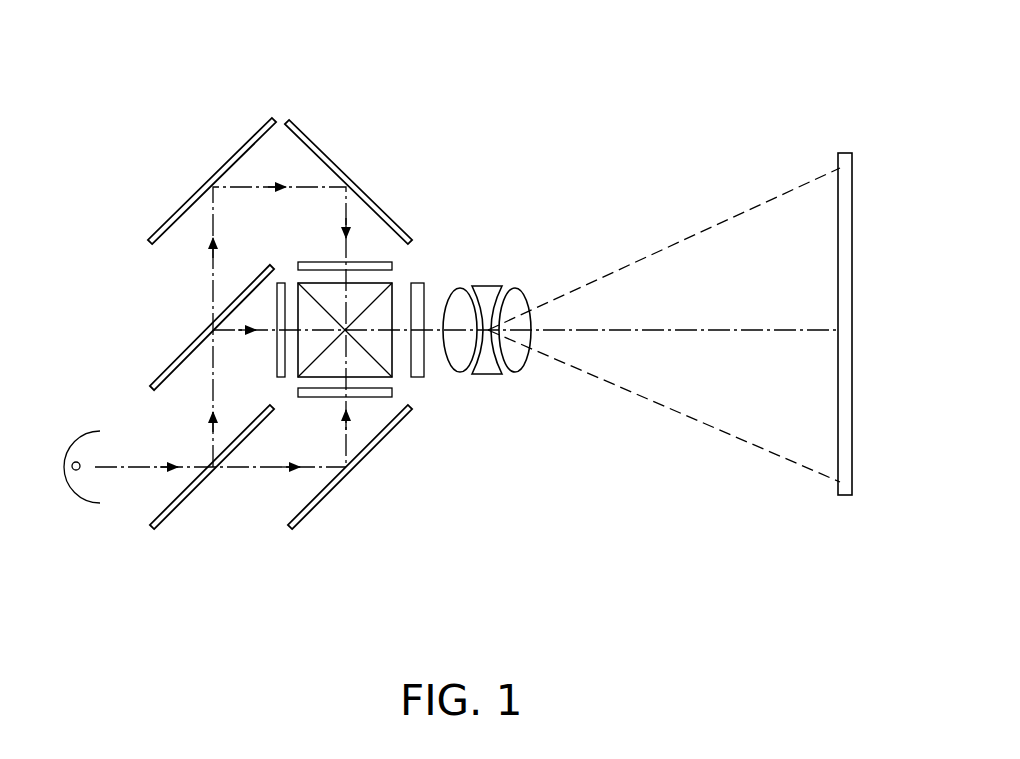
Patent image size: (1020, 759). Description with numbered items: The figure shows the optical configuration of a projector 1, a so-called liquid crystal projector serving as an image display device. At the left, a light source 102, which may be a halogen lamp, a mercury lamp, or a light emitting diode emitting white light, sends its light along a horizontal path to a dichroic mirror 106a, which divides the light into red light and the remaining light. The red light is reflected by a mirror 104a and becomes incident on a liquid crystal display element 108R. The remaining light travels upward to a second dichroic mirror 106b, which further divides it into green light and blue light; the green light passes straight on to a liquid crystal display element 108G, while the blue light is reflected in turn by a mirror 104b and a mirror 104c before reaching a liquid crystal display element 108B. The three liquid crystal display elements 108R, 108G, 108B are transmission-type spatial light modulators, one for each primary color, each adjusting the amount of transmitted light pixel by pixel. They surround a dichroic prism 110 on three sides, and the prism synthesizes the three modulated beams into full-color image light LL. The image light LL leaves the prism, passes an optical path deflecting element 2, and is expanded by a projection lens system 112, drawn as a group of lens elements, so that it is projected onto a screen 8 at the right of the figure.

The projector 1 is at (724, 88).
The light source 102 is at (82, 500).
The dichroic mirror 106a is at (187, 500).
The dichroic mirror 106b is at (170, 366).
The mirror 104a is at (322, 500).
The mirror 104b is at (233, 158).
The mirror 104c is at (326, 158).
The liquid crystal display element 108R is at (323, 400).
The liquid crystal display element 108G is at (277, 345).
The liquid crystal display element 108B is at (393, 265).
The dichroic prism 110 is at (393, 285).
The optical path deflecting element 2 is at (426, 362).
The image light LL is at (408, 385).
The projection lens system 112 is at (448, 378).
The screen 8 is at (843, 495).